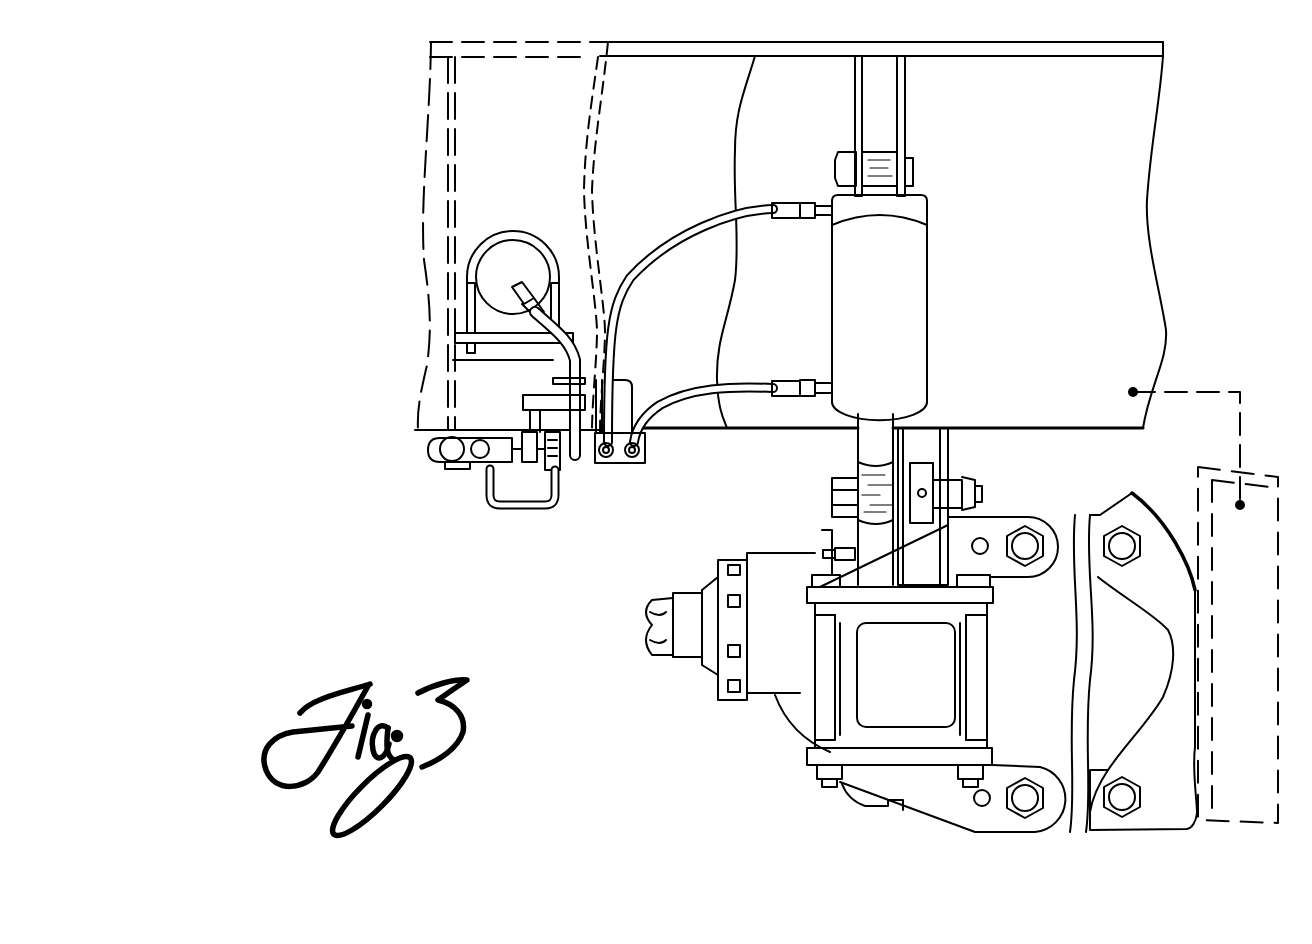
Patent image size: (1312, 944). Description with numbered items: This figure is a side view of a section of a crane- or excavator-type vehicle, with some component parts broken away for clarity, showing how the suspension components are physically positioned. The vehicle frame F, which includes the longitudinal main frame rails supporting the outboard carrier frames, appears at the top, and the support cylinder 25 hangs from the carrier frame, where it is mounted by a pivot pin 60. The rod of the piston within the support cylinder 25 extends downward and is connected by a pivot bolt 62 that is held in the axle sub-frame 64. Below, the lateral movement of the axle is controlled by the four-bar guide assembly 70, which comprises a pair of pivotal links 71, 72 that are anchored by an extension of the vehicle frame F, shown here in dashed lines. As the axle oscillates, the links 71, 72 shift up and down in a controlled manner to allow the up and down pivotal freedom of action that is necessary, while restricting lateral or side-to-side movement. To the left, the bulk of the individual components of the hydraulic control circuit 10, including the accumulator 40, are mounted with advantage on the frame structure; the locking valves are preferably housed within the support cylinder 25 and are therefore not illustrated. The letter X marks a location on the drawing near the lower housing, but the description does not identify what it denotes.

The hydraulic control circuit 10 is at (512, 503).
The support cylinder 25 is at (932, 262).
The accumulator 40 is at (516, 262).
The pivot pin 60 is at (908, 172).
The pivot bolt 62 is at (834, 493).
The axle sub-frame 64 is at (830, 550).
The 4-bar guide assembly 70 is at (968, 834).
The pivotal link 71 is at (1060, 830).
The pivotal link 72 is at (1060, 520).
The frame F is at (1110, 143).
The drive housing X is at (850, 705).